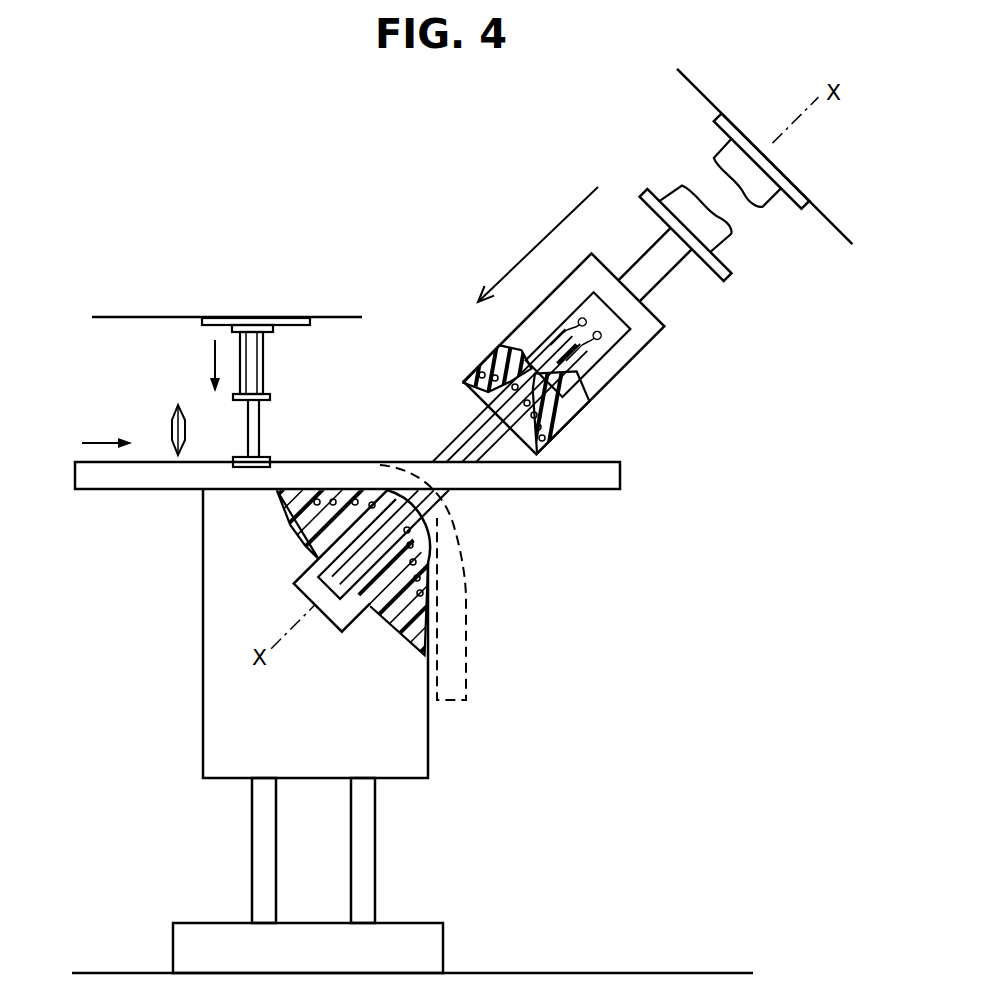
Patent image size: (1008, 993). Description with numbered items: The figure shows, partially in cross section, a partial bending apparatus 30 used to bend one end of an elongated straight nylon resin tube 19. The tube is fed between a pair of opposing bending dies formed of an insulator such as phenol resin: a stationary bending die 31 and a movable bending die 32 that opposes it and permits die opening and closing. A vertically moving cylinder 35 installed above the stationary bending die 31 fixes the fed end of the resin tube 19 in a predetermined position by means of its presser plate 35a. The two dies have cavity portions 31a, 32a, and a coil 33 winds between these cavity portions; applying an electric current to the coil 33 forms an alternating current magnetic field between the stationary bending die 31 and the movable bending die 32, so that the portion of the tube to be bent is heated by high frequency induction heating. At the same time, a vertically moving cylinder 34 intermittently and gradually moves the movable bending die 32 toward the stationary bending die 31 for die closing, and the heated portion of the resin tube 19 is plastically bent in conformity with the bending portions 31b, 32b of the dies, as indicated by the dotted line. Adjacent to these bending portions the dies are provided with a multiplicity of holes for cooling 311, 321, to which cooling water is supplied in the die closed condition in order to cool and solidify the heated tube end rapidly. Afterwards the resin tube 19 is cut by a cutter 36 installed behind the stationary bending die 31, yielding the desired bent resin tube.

The resin tube 19 is at (138, 482).
The partial bending apparatus 30 is at (612, 600).
The stationary bending die 31 is at (413, 743).
The cavity portion 31a is at (280, 614).
The bending portion 31b is at (370, 553).
The holes for cooling 311 is at (430, 593).
The movable bending die 32 is at (589, 327).
The cavity portion 32a is at (578, 344).
The bending portion 32b is at (489, 428).
The holes for cooling 321 is at (562, 430).
The coil 33 is at (456, 460).
The vertically moving cylinder 34 is at (723, 198).
The vertically moving cylinder 35 is at (255, 358).
The presser plate 35a is at (262, 460).
The cutter 36 is at (172, 422).